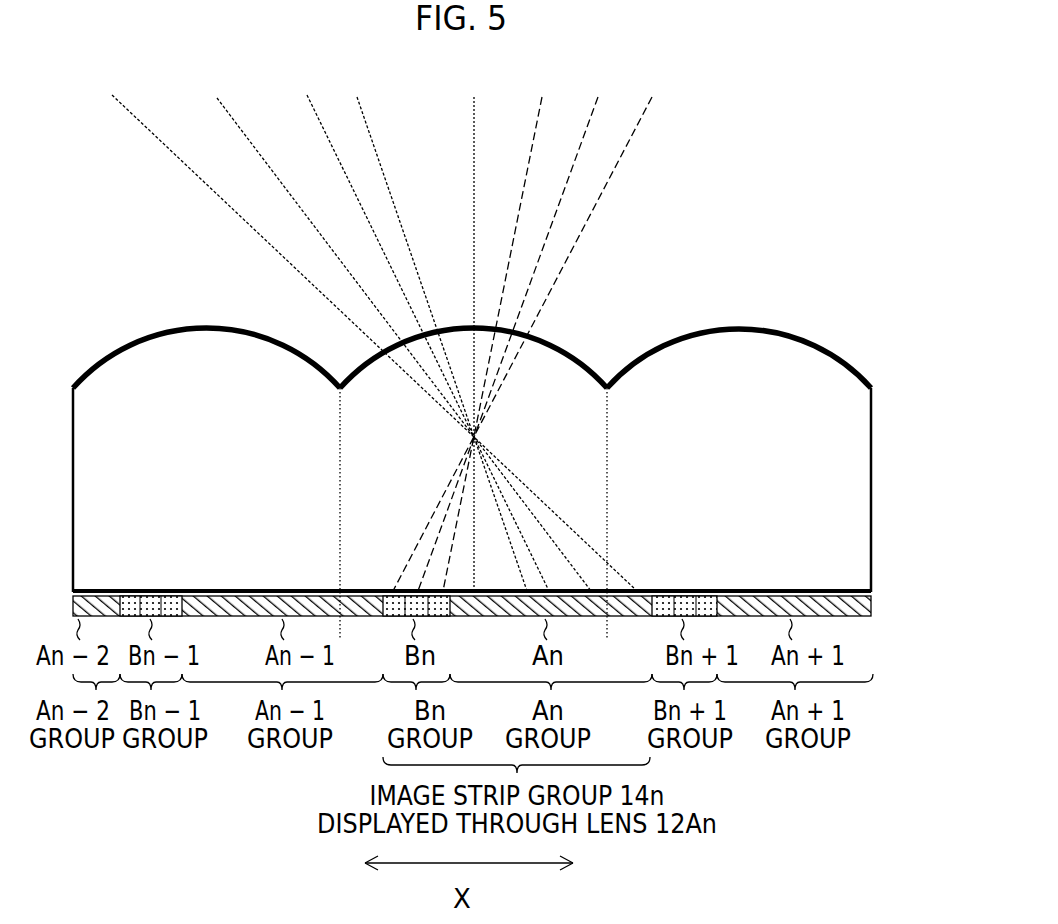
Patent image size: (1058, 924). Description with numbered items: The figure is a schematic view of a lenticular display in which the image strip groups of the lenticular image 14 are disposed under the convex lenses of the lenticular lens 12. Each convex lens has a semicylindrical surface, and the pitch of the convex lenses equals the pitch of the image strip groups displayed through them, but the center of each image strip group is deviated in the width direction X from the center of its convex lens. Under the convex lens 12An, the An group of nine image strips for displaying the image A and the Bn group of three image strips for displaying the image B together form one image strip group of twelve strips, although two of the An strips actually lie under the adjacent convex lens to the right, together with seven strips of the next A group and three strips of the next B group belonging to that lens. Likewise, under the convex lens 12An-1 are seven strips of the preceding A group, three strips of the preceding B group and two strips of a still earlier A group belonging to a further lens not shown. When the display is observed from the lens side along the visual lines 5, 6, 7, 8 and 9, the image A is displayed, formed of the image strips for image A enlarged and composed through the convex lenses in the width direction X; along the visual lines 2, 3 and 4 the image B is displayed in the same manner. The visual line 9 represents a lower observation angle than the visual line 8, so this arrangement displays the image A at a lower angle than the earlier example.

The visual line 2 is at (526, 329).
The visual line 3 is at (511, 329).
The visual line 4 is at (496, 329).
The visual line 5 is at (471, 329).
The visual line 6 is at (437, 329).
The visual line 7 is at (424, 329).
The visual line 8 is at (399, 329).
The visual line 9 is at (369, 329).
The lenticular lens 12 is at (512, 455).
The convex lens 12An-1 is at (198, 325).
The convex lens 12An is at (572, 352).
The lenticular image 14 is at (875, 605).